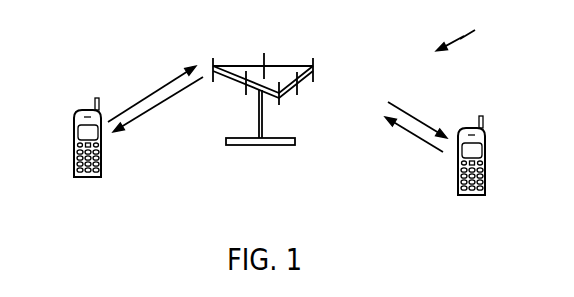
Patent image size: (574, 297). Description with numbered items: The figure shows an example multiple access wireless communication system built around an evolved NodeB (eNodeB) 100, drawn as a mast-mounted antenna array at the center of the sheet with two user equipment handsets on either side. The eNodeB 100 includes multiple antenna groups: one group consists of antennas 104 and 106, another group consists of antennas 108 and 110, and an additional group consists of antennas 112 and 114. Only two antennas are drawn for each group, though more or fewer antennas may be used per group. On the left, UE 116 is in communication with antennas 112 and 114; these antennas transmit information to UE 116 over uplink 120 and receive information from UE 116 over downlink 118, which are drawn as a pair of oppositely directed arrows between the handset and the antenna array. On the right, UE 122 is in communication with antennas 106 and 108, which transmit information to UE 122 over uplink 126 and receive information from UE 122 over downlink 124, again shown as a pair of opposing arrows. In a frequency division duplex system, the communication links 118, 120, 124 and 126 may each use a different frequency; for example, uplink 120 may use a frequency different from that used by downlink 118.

The evolved NodeB 100 is at (470, 33).
The antenna 104 is at (280, 105).
The antenna 106 is at (298, 92).
The antenna 108 is at (315, 77).
The antenna 110 is at (264, 54).
The antenna 112 is at (213, 58).
The antenna 114 is at (246, 94).
The UE 116 is at (74, 132).
The downlink 118 is at (158, 88).
The uplink 120 is at (150, 107).
The UE 122 is at (484, 148).
The downlink 124 is at (420, 135).
The uplink 126 is at (415, 122).